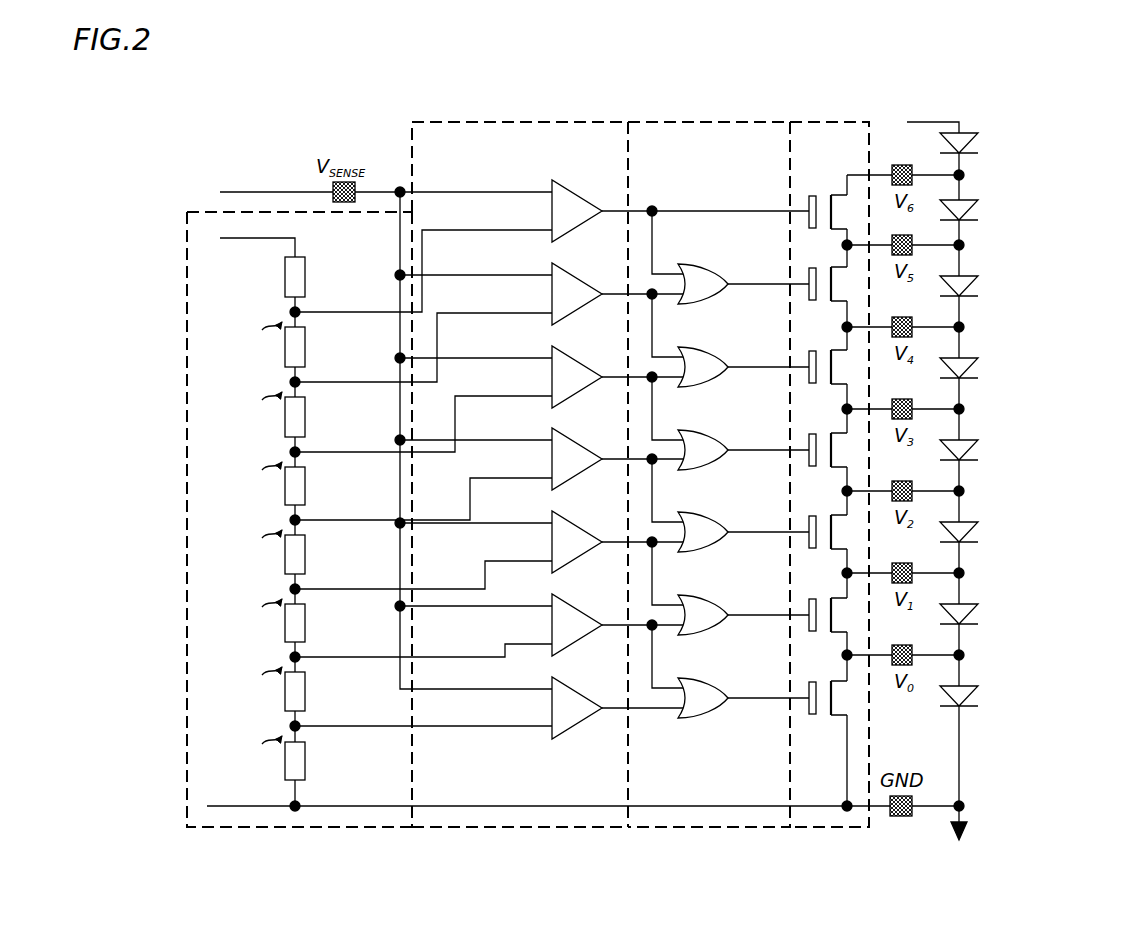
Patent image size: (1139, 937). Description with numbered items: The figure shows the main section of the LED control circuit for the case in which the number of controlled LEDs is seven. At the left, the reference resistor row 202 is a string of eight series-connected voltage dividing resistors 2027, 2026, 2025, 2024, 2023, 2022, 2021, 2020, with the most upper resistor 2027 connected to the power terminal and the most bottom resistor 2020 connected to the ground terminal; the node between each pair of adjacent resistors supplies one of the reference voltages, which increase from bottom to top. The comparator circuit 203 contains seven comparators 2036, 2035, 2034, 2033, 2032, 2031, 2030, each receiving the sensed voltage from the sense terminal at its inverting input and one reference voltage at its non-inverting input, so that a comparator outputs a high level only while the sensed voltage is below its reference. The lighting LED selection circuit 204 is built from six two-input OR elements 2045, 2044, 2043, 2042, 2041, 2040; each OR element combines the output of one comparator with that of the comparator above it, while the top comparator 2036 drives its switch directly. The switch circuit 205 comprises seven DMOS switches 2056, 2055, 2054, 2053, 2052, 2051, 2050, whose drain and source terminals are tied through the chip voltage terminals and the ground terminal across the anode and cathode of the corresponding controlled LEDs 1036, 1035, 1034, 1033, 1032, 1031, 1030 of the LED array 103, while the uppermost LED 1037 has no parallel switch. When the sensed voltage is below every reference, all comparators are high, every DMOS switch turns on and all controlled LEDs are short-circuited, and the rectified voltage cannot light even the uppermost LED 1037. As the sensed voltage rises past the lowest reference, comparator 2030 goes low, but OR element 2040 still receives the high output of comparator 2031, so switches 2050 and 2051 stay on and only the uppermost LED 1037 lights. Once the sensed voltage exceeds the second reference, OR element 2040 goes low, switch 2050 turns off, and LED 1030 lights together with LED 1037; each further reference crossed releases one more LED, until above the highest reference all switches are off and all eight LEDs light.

The LED array 103 is at (1055, 125).
The uppermost LED 1037 is at (977, 147).
The LED 1036 is at (977, 214).
The LED 1035 is at (977, 290).
The LED 1034 is at (977, 372).
The LED 1033 is at (977, 454).
The LED 1032 is at (977, 536).
The LED 1031 is at (977, 618).
The LED 1030 is at (977, 700).
The reference resistor row 202 is at (298, 830).
The resistor 2027 is at (306, 280).
The resistor 2026 is at (306, 350).
The resistor 2025 is at (306, 420).
The resistor 2024 is at (306, 488).
The resistor 2023 is at (306, 557).
The resistor 2022 is at (306, 625).
The resistor 2021 is at (306, 694).
The resistor 2020 is at (306, 763).
The comparator circuit 203 is at (523, 830).
The comparator 2036 is at (578, 241).
The comparator 2035 is at (578, 324).
The comparator 2034 is at (578, 407).
The comparator 2033 is at (578, 489).
The comparator 2032 is at (578, 572).
The comparator 2031 is at (578, 655).
The comparator 2030 is at (578, 738).
The lighting LED selection circuit 204 is at (705, 830).
The OR element 2045 is at (724, 300).
The OR element 2044 is at (724, 383).
The OR element 2043 is at (724, 466).
The OR element 2042 is at (724, 548).
The OR element 2041 is at (724, 631).
The OR element 2040 is at (724, 714).
The switch circuit 205 is at (818, 830).
The DMOS switch 2056 is at (824, 190).
The DMOS switch 2055 is at (821, 306).
The DMOS switch 2054 is at (821, 389).
The DMOS switch 2053 is at (821, 472).
The DMOS switch 2052 is at (821, 554).
The DMOS switch 2051 is at (821, 637).
The DMOS switch 2050 is at (821, 720).